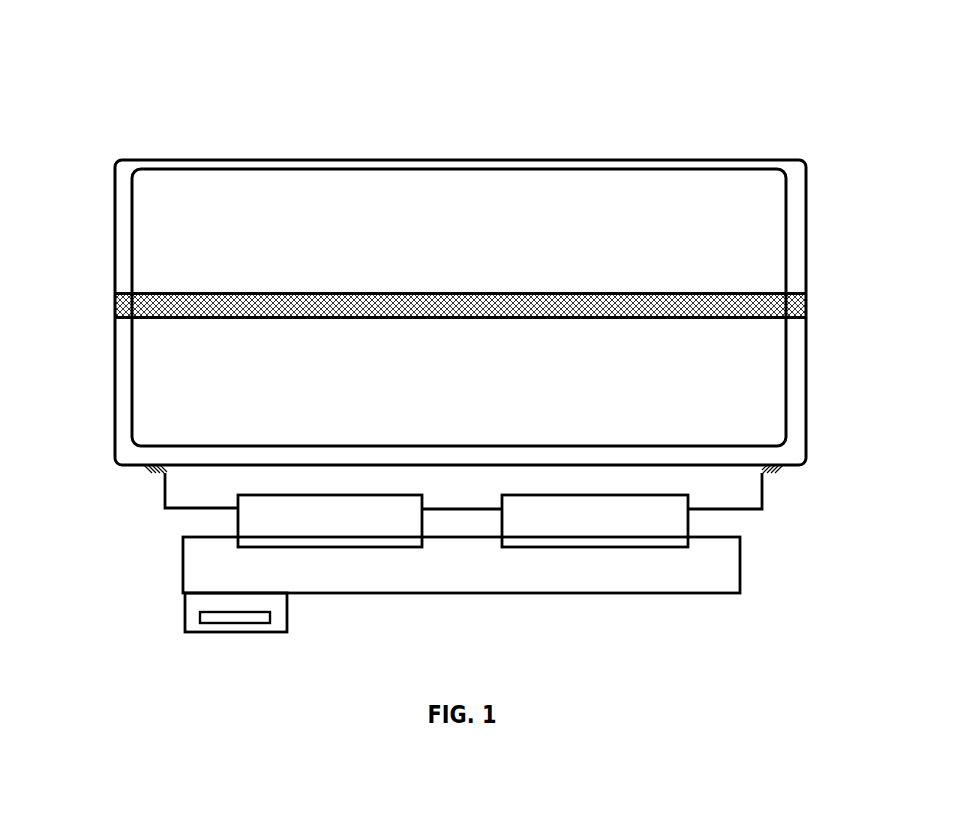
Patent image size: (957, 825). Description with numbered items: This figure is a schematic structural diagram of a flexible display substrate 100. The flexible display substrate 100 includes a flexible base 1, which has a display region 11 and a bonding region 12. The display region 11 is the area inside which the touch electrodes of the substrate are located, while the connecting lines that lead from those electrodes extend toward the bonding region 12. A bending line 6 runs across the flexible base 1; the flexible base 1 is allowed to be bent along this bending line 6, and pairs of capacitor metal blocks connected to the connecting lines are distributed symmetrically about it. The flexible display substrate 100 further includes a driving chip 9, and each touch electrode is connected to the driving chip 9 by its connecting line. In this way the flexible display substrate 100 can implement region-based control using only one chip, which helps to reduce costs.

The flexible display substrate 100 is at (460, 44).
The flexible base 1 is at (740, 92).
The display region 11 is at (660, 200).
The bonding region 12 is at (788, 168).
The bending line 6 is at (758, 303).
The driving chip 9 is at (190, 623).